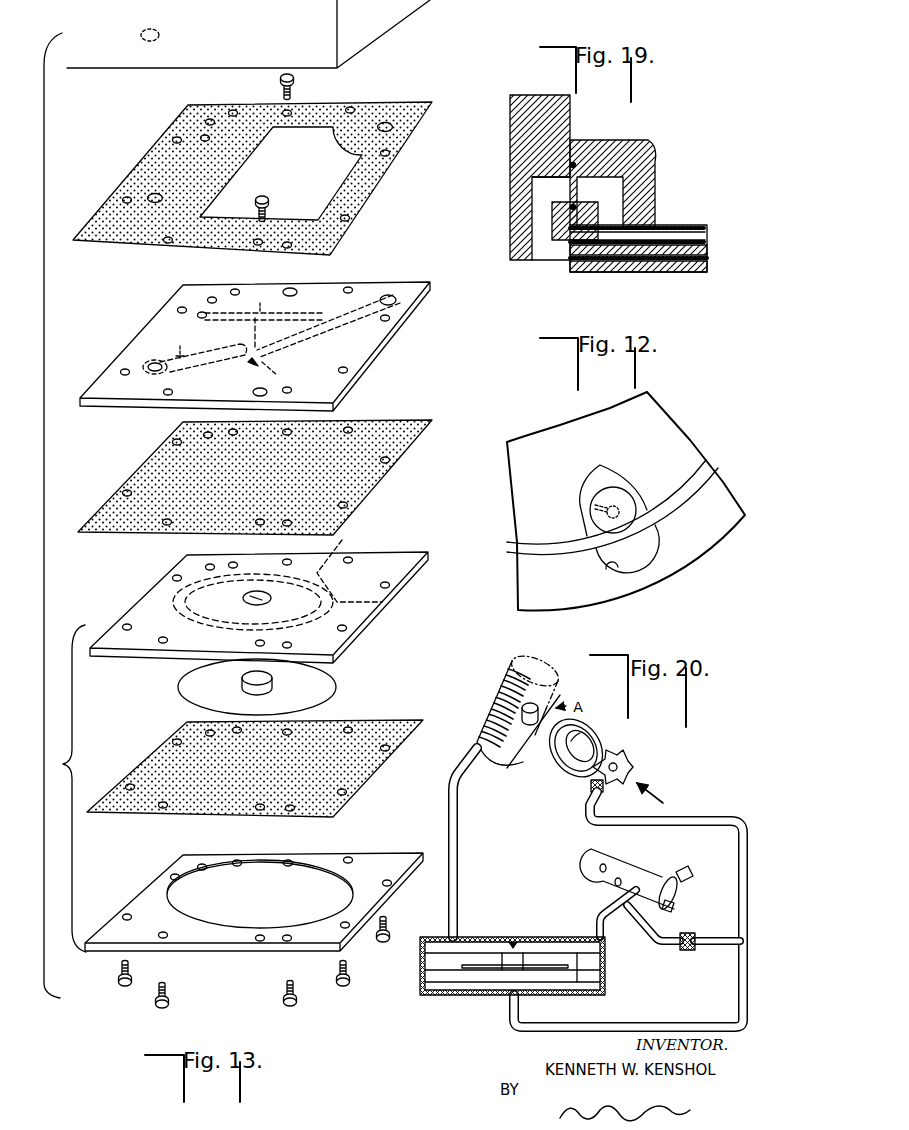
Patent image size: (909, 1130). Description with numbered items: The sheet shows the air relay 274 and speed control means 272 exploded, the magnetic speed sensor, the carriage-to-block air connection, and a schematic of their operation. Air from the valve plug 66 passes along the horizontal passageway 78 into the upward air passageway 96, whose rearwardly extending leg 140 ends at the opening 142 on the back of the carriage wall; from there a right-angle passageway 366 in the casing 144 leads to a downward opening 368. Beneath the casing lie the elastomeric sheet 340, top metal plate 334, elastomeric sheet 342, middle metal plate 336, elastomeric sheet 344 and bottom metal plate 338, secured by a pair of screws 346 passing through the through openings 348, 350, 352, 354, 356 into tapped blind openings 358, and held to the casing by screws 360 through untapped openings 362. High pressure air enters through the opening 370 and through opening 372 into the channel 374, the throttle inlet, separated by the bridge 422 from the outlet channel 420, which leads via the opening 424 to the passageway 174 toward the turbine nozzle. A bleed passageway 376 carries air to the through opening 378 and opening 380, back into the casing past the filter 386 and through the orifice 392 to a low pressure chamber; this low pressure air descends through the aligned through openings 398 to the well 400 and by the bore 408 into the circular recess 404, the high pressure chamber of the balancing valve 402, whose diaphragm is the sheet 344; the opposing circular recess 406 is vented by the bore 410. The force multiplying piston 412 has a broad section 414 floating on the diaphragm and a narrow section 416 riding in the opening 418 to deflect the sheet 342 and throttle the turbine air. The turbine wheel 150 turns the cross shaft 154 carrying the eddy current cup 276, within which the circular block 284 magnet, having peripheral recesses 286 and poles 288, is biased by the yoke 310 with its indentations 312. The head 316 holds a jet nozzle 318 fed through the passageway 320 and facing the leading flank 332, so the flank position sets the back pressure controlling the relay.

In FIG. 13, the passageway 174 is at (161, 31).
In FIG. 13, the casing 144 is at (375, 47).
In FIG. 13, the balancing valve 402 is at (65, 788).
In FIG. 13, the elastomeric sheet 340 is at (388, 180).
In FIG. 19, the elastomeric sheet 340 is at (704, 228).
In FIG. 13, the screws 346 is at (290, 72).
In FIG. 20, the screws 346 is at (591, 787).
In FIG. 13, the through opening 348 is at (292, 109).
In FIG. 13, the opening 370 is at (389, 122).
In FIG. 19, the opening 370 is at (664, 226).
In FIG. 13, the opening 424 is at (158, 193).
In FIG. 13, the opening 380 is at (207, 143).
In FIG. 13, the through openings 398 is at (206, 120).
In FIG. 13, the untapped openings 362 is at (173, 140).
In FIG. 13, the top metal plate 334 is at (402, 333).
In FIG. 13, the through opening 350 is at (296, 290).
In FIG. 13, the through opening 372 is at (394, 296).
In FIG. 13, the through opening 378 is at (199, 312).
In FIG. 13, the bridge 422 is at (106, 351).
In FIG. 20, the bridge 422 is at (515, 942).
In FIG. 13, the bleed passageway 376 is at (240, 322).
In FIG. 13, the outlet channel 420 is at (180, 351).
In FIG. 20, the outlet channel 420 is at (478, 940).
In FIG. 13, the channel 374 is at (312, 343).
In FIG. 20, the channel 374 is at (551, 946).
In FIG. 13, the speed control means 272 is at (277, 369).
In FIG. 13, the elastomeric sheet 342 is at (395, 478).
In FIG. 20, the elastomeric sheet 342 is at (585, 986).
In FIG. 13, the through opening 352 is at (289, 436).
In FIG. 13, the middle metal plate 336 is at (400, 607).
In FIG. 13, the through opening 354 is at (286, 560).
In FIG. 13, the circular recess 406 is at (345, 550).
In FIG. 20, the circular recess 406 is at (422, 968).
In FIG. 13, the bore 410 is at (372, 596).
In FIG. 20, the bore 410 is at (606, 964).
In FIG. 13, the opening 418 is at (243, 599).
In FIG. 13, the air relay 274 is at (345, 685).
In FIG. 13, the narrow section 416 is at (243, 680).
In FIG. 20, the narrow section 416 is at (522, 960).
In FIG. 13, the force multiplying piston 412 is at (337, 680).
In FIG. 20, the force multiplying piston 412 is at (492, 975).
In FIG. 13, the broad section 414 is at (334, 700).
In FIG. 20, the broad section 414 is at (468, 975).
In FIG. 13, the elastomeric sheet 344 is at (382, 783).
In FIG. 20, the elastomeric sheet 344 is at (449, 975).
In FIG. 13, the through opening 356 is at (288, 735).
In FIG. 13, the bottom metal plate 338 is at (397, 899).
In FIG. 13, the bore 408 is at (205, 876).
In FIG. 20, the bore 408 is at (508, 996).
In FIG. 13, the circular recess 404 is at (316, 868).
In FIG. 20, the circular recess 404 is at (432, 980).
In FIG. 13, the well 400 is at (203, 863).
In FIG. 13, the tapped blind openings 358 is at (290, 860).
In FIG. 13, the screws 360 is at (170, 1006).
In FIG. 19, the rearwardly extending leg 140 is at (528, 190).
In FIG. 19, the air passageway 96 is at (542, 231).
In FIG. 19, the opening 142 is at (580, 172).
In FIG. 19, the right-angle passageway 366 is at (616, 185).
In FIG. 19, the opening 368 is at (620, 209).
In FIG. 12, the yoke 310 is at (697, 545).
In FIG. 12, the poles 288 is at (690, 472).
In FIG. 12, the peripheral recesses 286 is at (600, 465).
In FIG. 12, the indentations 312 is at (612, 567).
In FIG. 12, the head 316 is at (631, 505).
In FIG. 12, the passageway 320 is at (623, 490).
In FIG. 12, the jet nozzle 318 is at (590, 506).
In FIG. 12, the leading flank 332 is at (583, 520).
In FIG. 20, the turbine wheel 150 is at (508, 668).
In FIG. 20, the cross shaft 154 is at (540, 712).
In FIG. 20, the eddy current cup 276 is at (556, 763).
In FIG. 20, the circular block 284 is at (636, 770).
In FIG. 20, the horizontal passageway 78 is at (458, 851).
In FIG. 20, the valve plug 66 is at (642, 874).
In FIG. 20, the filter 386 is at (692, 934).
In FIG. 20, the orifice 392 is at (710, 950).